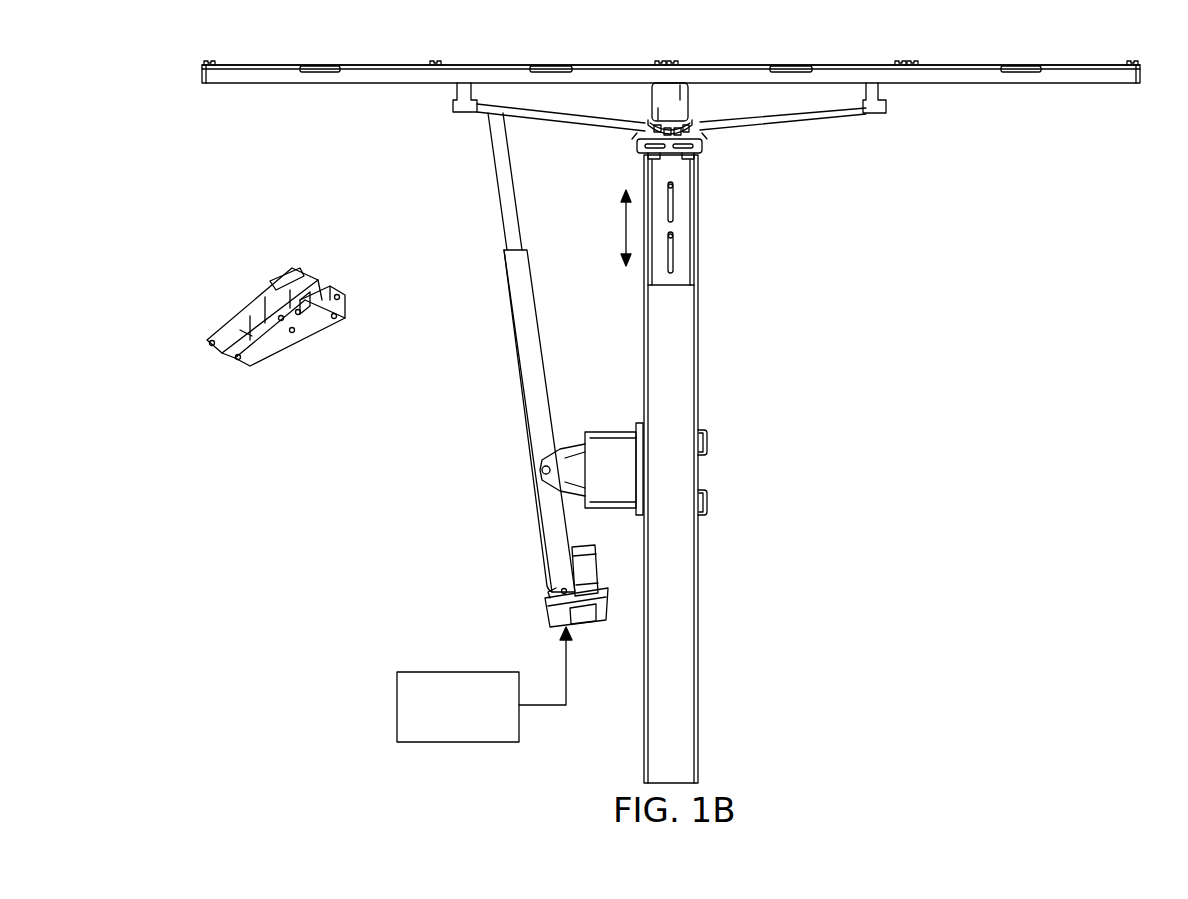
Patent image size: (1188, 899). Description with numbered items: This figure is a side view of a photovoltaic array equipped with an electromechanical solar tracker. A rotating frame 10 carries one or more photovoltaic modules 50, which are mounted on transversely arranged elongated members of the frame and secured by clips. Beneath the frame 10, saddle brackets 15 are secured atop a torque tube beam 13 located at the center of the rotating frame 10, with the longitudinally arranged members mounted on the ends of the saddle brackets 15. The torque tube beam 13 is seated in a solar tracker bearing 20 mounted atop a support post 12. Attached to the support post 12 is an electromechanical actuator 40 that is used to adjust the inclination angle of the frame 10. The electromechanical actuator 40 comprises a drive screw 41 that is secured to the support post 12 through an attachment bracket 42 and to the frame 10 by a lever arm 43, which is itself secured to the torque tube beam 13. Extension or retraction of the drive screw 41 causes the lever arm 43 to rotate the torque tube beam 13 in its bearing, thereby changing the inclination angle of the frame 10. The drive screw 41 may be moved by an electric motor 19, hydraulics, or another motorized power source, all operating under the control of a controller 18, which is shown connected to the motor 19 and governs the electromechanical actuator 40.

The frame 10 is at (1145, 62).
The photovoltaic modules 50 is at (536, 64).
The support post 12 is at (642, 688).
The torque tube beam 13 is at (676, 108).
The saddle bracket 15 is at (800, 118).
The mounting bracket 20 is at (679, 132).
The electromechanical actuator 40 is at (427, 114).
The drive screw 41 is at (524, 406).
The attachment bracket 42 is at (591, 430).
The lever arm 43 is at (477, 115).
The electric motor 19 is at (600, 567).
The controller 18 is at (397, 708).